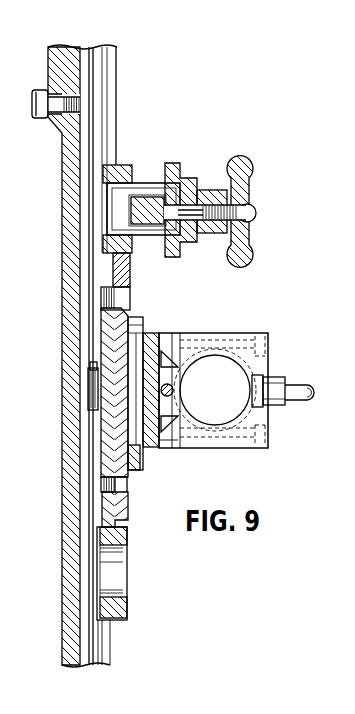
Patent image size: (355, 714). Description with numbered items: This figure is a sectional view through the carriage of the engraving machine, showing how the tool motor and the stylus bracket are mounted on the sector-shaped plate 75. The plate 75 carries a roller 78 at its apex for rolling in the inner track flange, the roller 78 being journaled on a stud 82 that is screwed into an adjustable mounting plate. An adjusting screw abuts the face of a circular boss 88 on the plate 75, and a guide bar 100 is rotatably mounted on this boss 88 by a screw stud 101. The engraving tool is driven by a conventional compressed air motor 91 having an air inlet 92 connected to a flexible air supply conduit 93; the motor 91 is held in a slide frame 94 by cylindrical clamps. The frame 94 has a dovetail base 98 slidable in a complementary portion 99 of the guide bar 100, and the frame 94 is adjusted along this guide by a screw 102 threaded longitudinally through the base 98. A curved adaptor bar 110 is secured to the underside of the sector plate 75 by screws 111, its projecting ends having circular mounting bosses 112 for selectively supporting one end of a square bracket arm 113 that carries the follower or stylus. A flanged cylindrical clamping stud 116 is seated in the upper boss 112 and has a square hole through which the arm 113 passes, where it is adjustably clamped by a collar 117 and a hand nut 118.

The sector-shaped plate 75 is at (120, 517).
The roller 78 is at (90, 417).
The stud 82 is at (87, 390).
The circular boss 88 is at (140, 455).
The compressed air motor 91 is at (215, 390).
The air inlet 92 is at (265, 376).
The flexible air supply conduit 93 is at (302, 387).
The slide frame 94 is at (205, 334).
The dovetail base 98 is at (168, 357).
The complementary guide portion 99 is at (165, 363).
The guide bar 100 is at (165, 440).
The screw stud 101 is at (90, 370).
The adjusting screw 102 is at (172, 393).
The curved adaptor bar 110 is at (103, 268).
The screws 111 is at (130, 285).
The circular mounting bosses 112 is at (120, 165).
The bracket arm 113 is at (148, 197).
The flanged cylindrical clamping stud 116 is at (113, 201).
The collar 117 is at (186, 176).
The hand nut 118 is at (247, 167).